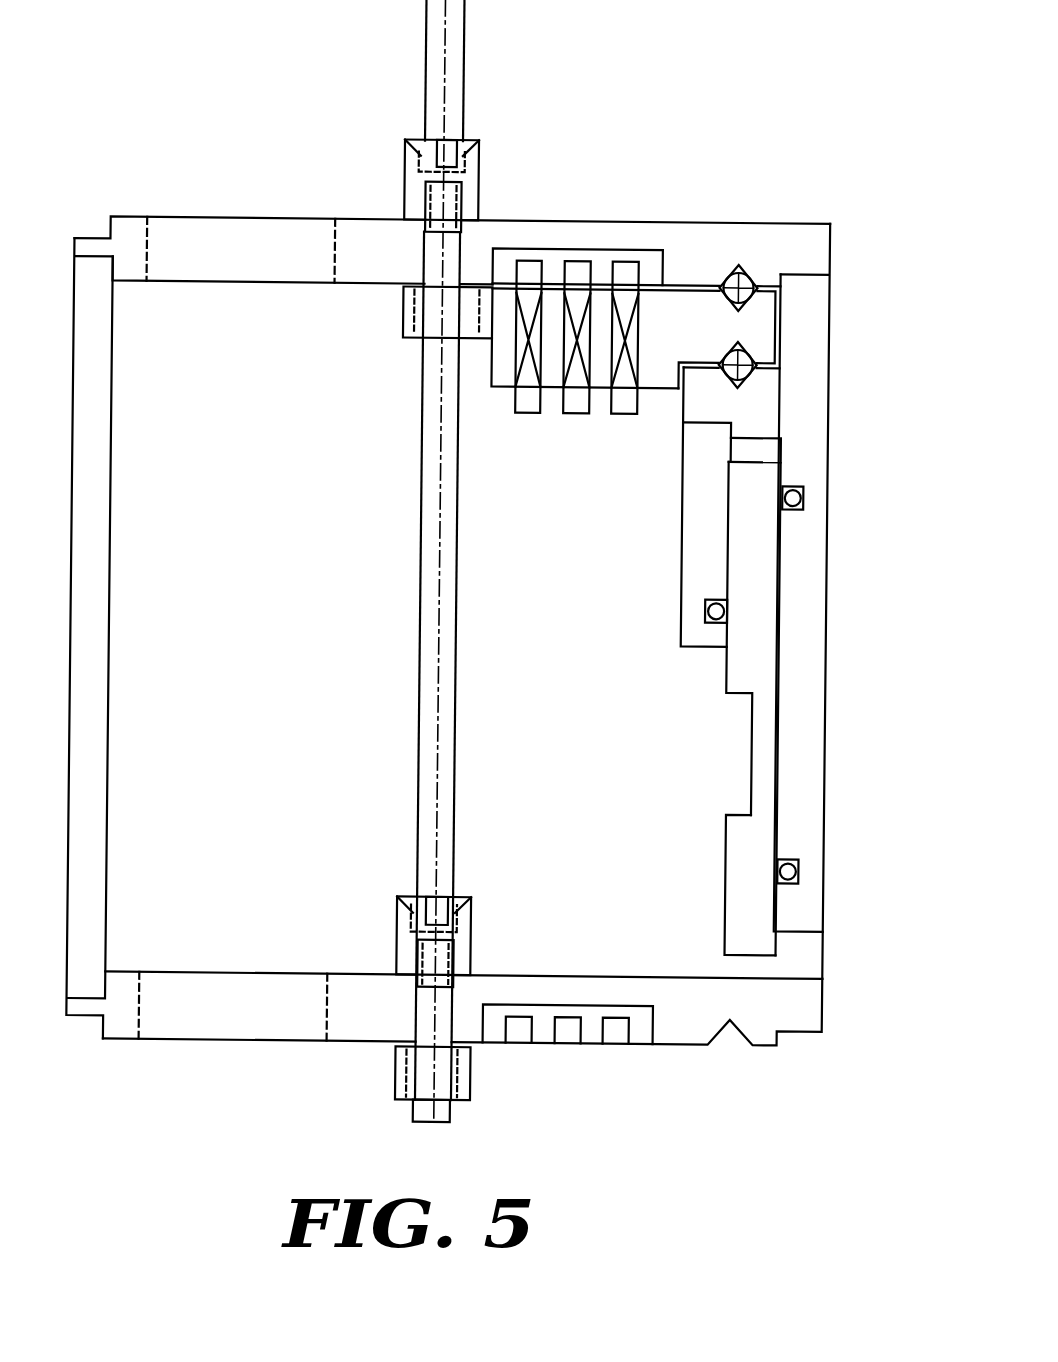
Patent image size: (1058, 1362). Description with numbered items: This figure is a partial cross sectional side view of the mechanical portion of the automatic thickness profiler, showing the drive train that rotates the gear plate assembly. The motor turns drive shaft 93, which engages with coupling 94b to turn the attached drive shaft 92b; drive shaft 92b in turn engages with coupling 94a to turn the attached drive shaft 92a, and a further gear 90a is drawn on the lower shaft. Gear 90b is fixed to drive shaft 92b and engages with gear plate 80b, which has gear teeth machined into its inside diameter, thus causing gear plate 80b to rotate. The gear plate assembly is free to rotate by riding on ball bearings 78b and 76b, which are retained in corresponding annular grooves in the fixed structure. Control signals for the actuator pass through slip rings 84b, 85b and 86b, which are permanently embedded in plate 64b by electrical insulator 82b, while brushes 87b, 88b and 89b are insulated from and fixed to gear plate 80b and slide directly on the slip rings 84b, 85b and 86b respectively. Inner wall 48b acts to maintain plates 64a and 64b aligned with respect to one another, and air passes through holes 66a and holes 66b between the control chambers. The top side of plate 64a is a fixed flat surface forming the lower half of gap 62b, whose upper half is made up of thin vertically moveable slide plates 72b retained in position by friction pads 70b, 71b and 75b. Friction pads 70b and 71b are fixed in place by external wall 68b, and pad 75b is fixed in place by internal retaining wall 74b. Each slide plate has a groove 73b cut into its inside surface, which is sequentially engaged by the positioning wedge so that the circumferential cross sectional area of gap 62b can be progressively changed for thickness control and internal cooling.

The drive shaft 93 is at (419, 76).
The coupling 94b is at (400, 157).
The holes 66b is at (141, 241).
The plate 64b is at (760, 219).
The inner wall 48b is at (110, 538).
The drive shaft 92b is at (419, 521).
The gear 90b is at (399, 316).
The electrical insulator 82b is at (507, 247).
The slip ring 84b is at (530, 259).
The slip ring 85b is at (577, 259).
The slip ring 86b is at (630, 259).
The brush 87b is at (522, 376).
The brush 88b is at (572, 376).
The brush 89b is at (620, 379).
The ball bearing 78b is at (754, 272).
The ball bearing 76b is at (754, 377).
The gear plate 80b is at (777, 325).
The external wall 68b is at (826, 364).
The internal retaining wall 74b is at (680, 518).
The groove 73b is at (754, 742).
The slide plate 72b is at (727, 874).
The friction pad 71b is at (802, 496).
The friction pad 75b is at (727, 609).
The friction pad 70b is at (801, 868).
The gap 62b is at (777, 965).
The holes 66a is at (137, 1005).
The plate 64a is at (826, 1010).
The coupling 94a is at (399, 932).
The lower bearing block 90a is at (399, 1074).
The drive shaft 92a is at (417, 1116).